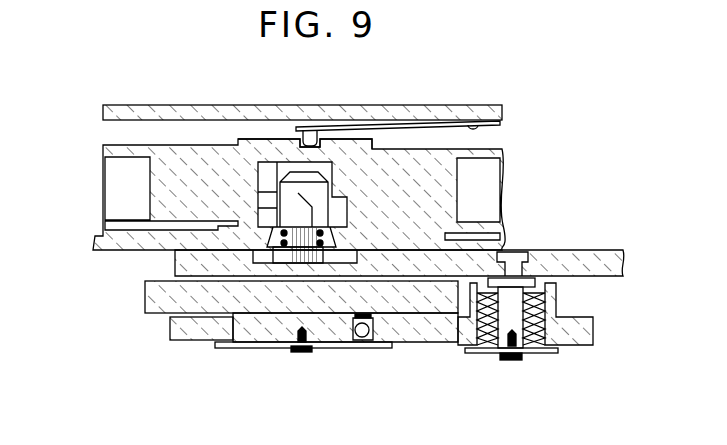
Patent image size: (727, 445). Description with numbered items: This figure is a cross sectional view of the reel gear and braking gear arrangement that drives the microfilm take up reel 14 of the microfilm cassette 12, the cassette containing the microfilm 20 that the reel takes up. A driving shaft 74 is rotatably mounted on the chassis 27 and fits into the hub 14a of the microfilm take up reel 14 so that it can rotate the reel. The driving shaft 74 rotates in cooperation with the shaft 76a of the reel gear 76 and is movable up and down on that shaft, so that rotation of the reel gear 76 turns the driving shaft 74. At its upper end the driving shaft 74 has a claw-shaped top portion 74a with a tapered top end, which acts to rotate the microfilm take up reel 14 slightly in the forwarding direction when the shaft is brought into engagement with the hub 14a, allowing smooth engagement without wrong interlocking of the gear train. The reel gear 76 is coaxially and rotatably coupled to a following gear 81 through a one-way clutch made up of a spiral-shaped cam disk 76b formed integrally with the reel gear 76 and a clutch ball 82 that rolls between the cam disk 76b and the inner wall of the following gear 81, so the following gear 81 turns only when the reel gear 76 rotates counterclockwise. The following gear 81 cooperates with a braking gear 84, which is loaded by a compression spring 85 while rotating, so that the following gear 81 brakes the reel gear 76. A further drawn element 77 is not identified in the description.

The microfilm cassette 12 is at (128, 103).
The microfilm take up reel 14 is at (433, 155).
The hub 14a is at (358, 165).
The microfilm 20 is at (447, 190).
The chassis 27 is at (592, 250).
The driving shaft 74 is at (298, 172).
The claw-shaped top portion 74a is at (272, 197).
The reel gear 76 is at (145, 290).
The shaft of the reel gear 76a is at (302, 243).
The spiral-shaped cam disk 76b is at (350, 322).
The strip plate 77 is at (277, 243).
The following gear 81 is at (421, 346).
The clutch ball 82 is at (363, 345).
The braking gear 84 is at (463, 348).
The compression spring 85 is at (528, 352).